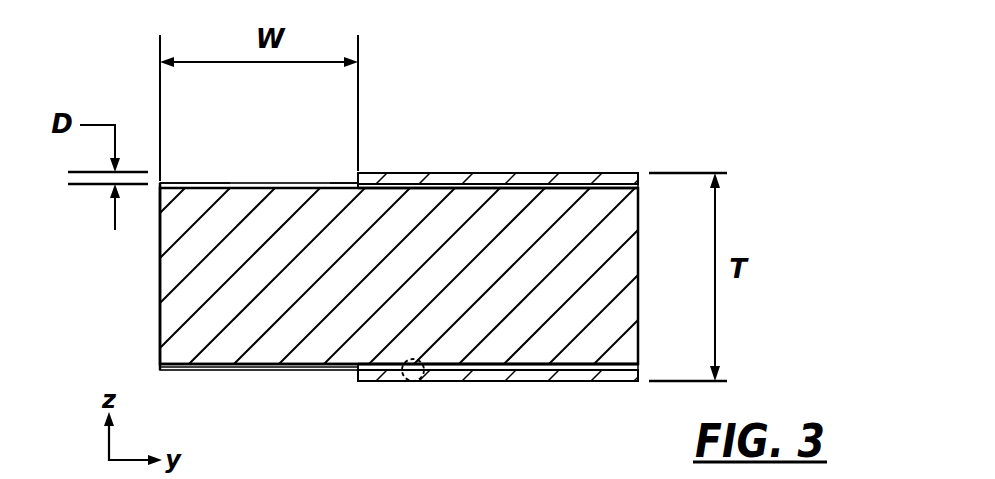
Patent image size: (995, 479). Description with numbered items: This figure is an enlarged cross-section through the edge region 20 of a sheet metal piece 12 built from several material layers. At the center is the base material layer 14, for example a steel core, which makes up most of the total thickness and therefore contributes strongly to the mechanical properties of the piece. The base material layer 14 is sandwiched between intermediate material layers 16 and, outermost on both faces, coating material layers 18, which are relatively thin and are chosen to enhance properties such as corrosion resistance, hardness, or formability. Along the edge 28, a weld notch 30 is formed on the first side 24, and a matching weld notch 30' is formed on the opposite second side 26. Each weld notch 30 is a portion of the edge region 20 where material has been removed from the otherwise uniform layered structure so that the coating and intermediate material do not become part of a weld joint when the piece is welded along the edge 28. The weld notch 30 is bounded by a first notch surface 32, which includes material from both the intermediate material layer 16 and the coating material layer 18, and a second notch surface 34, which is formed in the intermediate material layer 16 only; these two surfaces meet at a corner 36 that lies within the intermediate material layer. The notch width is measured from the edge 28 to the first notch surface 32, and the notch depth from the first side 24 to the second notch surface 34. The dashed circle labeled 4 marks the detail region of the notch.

The detail region shown in FIG. 4 is at (451, 405).
The sheet metal piece 12 is at (411, 202).
The base material layer 14 is at (623, 250).
The intermediate material layer 16 is at (595, 184).
The coating material layer 18 is at (532, 184).
The edge region 20 is at (296, 386).
The first side 24 is at (457, 172).
The second side 26 is at (537, 382).
The edge 28 is at (158, 262).
The weld notch 30 is at (259, 150).
The weld notch 30' is at (259, 391).
The first notch surface 32 is at (357, 174).
The second notch surface 34 is at (215, 183).
The corner 36 is at (358, 185).